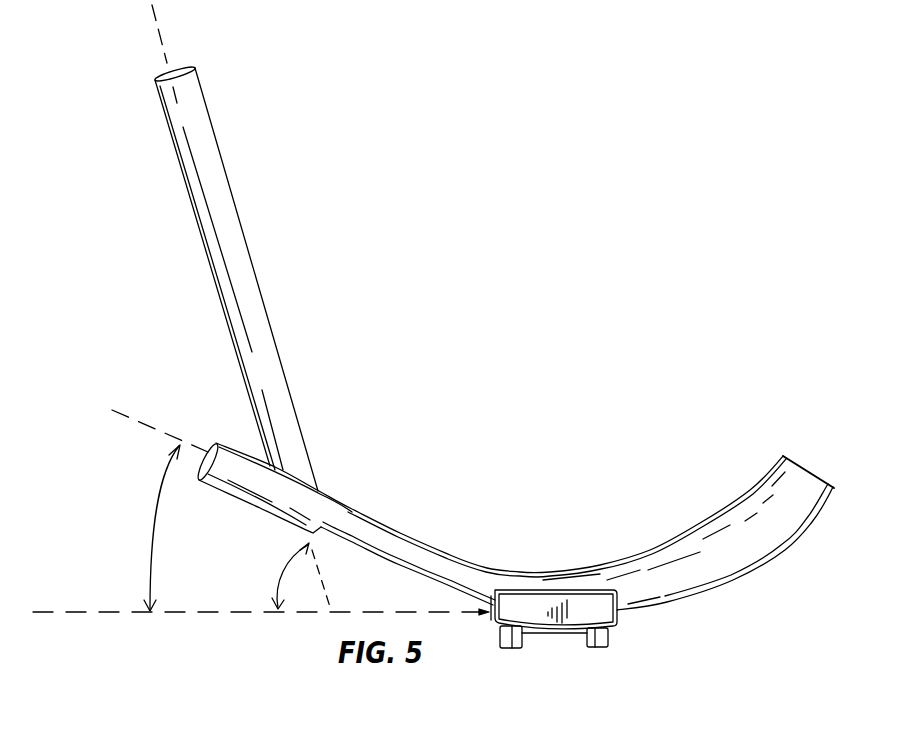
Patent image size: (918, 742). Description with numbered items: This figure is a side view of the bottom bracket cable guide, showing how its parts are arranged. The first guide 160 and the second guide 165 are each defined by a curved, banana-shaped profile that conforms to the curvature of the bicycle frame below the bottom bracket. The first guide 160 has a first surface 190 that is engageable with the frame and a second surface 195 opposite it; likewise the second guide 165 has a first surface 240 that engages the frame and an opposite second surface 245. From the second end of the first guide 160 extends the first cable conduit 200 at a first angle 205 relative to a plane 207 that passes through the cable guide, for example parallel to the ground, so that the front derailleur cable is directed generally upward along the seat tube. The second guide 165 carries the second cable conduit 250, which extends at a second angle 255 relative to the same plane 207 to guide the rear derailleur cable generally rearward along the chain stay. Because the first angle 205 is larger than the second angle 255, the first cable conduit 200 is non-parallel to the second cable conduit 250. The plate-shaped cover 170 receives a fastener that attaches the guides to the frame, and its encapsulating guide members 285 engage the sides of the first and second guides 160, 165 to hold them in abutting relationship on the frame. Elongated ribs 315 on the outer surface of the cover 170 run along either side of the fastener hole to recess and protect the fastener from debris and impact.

The first guide 160 is at (514, 545).
The second guide 165 is at (413, 550).
The cover 170 is at (493, 619).
The first surface 190 is at (720, 518).
The second surface 195 is at (725, 567).
The first cable conduit 200 is at (258, 328).
The first angle 205 is at (283, 572).
The plane 207 is at (242, 614).
The first surface 240 is at (654, 550).
The second surface 245 is at (675, 600).
The second cable conduit 250 is at (300, 500).
The second angle 255 is at (149, 531).
The guide members 285 is at (555, 610).
The elongated ribs 315 is at (518, 643).